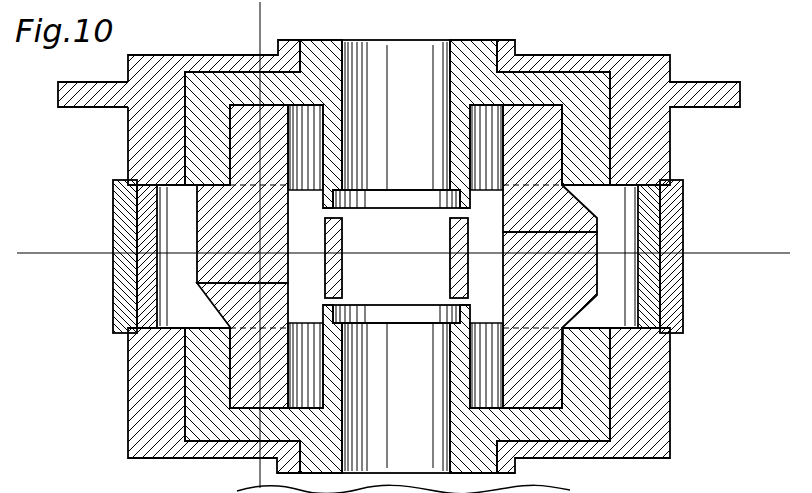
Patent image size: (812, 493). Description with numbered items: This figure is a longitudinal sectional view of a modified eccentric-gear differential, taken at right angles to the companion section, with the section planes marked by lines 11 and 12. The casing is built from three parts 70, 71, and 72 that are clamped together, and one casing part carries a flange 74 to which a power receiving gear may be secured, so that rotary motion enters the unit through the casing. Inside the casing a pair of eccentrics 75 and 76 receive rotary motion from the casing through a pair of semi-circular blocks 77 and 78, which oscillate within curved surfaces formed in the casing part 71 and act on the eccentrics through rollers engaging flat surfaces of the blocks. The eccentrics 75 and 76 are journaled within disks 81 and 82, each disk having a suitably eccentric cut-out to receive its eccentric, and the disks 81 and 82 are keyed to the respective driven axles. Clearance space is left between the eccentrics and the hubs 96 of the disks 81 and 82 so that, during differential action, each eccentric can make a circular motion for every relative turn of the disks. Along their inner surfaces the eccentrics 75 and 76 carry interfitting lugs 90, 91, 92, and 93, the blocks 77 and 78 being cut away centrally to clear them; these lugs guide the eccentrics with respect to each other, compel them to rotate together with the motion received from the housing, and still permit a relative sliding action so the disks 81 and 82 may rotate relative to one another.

The section line 11- 11 is at (28, 270).
The section line 12- 12 is at (240, 14).
The casing part 70 is at (660, 71).
The casing part 71 is at (685, 223).
The casing part 72 is at (668, 366).
The flange 74 is at (90, 108).
The eccentric 75 is at (543, 157).
The eccentric 76 is at (547, 383).
The semi-circular block 77 is at (143, 297).
The semi-circular block 78 is at (448, 267).
The disk 81 is at (200, 143).
The disk 82 is at (193, 390).
The interfitting lug 90 is at (210, 230).
The interfitting lug 91 is at (560, 303).
The interfitting lug 92 is at (583, 222).
The interfitting lug 93 is at (213, 303).
The hub 96 is at (478, 128).